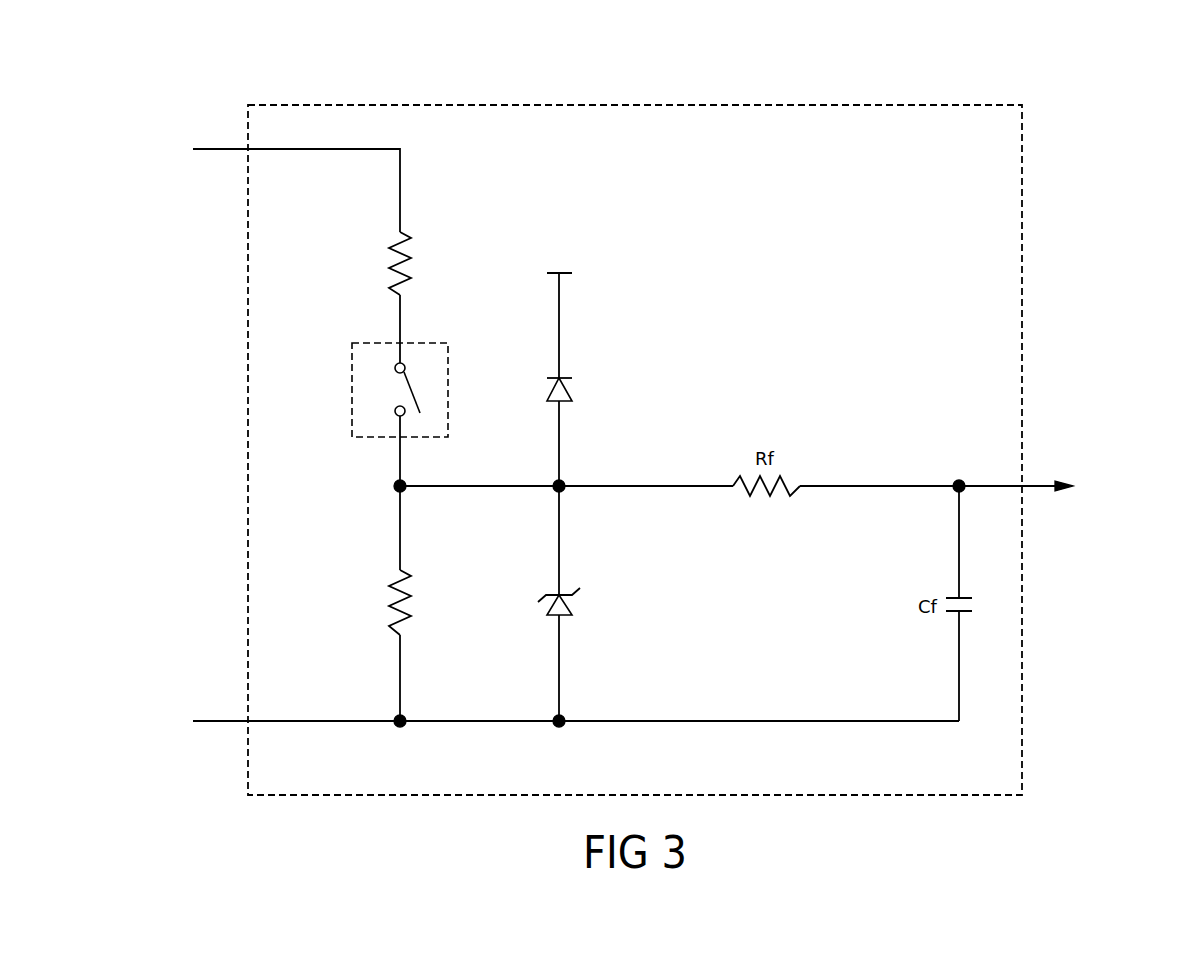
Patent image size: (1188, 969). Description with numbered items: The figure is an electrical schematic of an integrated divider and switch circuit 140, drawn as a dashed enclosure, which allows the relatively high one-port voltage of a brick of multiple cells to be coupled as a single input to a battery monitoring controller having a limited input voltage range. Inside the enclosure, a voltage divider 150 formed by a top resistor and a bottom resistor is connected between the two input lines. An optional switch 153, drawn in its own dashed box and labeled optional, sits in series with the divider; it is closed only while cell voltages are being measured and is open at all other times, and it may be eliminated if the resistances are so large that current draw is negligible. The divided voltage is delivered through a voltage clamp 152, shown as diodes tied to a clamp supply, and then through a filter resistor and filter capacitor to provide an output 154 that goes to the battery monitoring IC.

The integrated divider and switch circuit 140 is at (402, 103).
The voltage divider 150 is at (430, 216).
The voltage clamp 152 is at (636, 312).
The switch 153 is at (428, 342).
The output 154 is at (1033, 486).